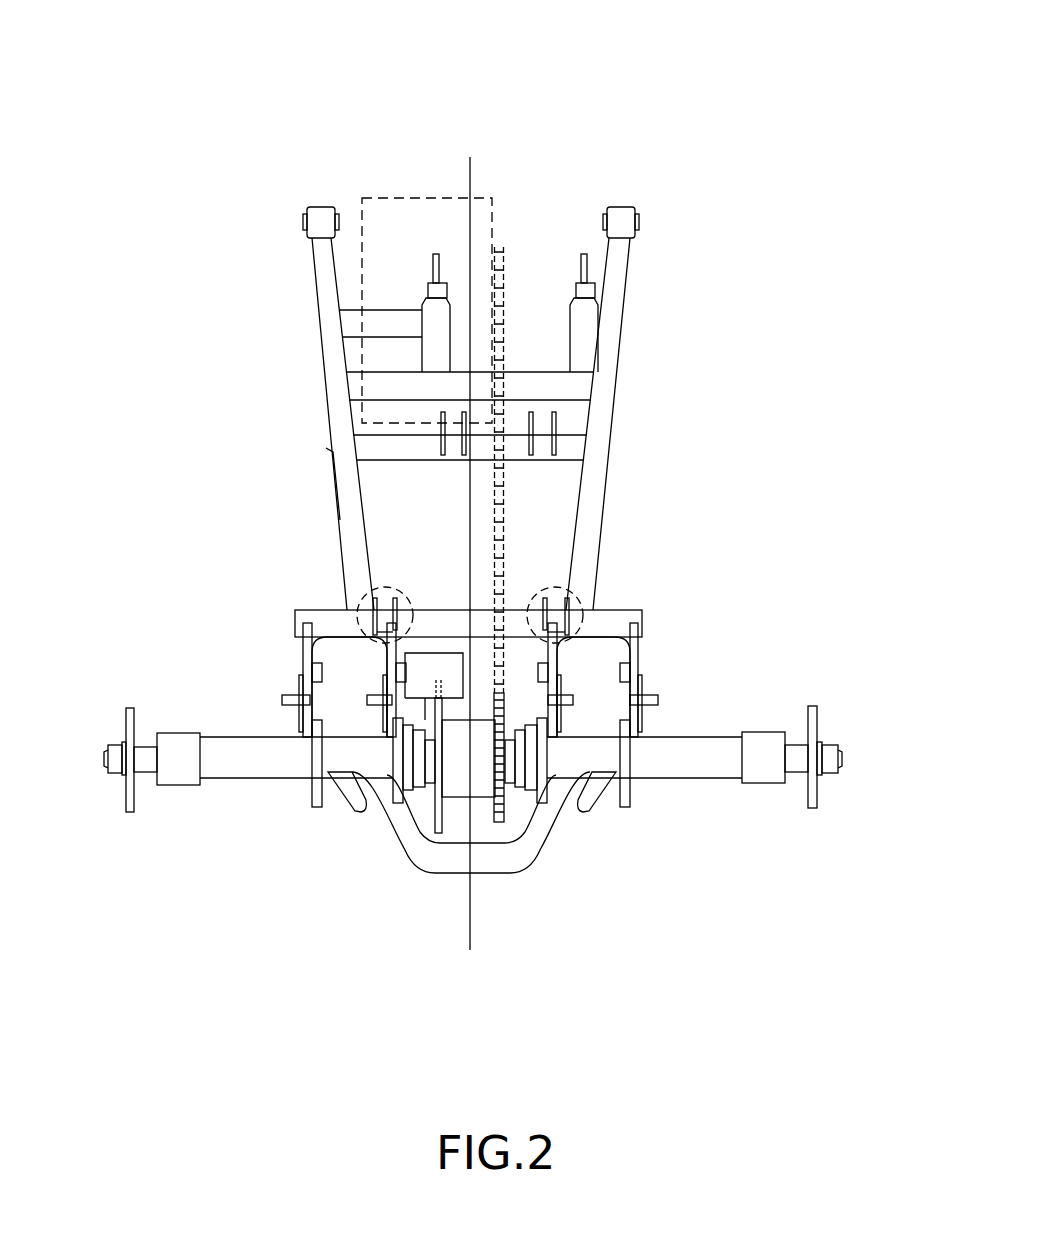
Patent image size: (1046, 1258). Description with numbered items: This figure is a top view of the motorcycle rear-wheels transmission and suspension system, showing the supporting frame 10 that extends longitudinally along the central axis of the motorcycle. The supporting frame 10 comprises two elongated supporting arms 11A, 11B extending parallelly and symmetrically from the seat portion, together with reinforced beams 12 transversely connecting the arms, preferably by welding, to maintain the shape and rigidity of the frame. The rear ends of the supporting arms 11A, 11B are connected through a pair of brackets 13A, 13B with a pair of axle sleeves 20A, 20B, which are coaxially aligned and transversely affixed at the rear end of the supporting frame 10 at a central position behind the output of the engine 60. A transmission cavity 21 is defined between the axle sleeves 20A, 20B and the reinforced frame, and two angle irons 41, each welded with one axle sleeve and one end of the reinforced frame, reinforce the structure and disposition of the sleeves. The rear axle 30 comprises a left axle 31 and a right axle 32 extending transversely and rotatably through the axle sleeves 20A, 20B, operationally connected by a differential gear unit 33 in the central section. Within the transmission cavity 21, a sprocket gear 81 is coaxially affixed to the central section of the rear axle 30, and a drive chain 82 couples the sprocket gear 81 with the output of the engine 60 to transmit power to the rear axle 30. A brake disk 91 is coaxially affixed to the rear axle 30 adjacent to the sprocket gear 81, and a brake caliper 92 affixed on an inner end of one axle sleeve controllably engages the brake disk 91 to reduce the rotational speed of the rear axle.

The supporting frame 10 is at (388, 170).
The engine 60 is at (442, 223).
The supporting arm 11A is at (327, 322).
The supporting arm 11B is at (614, 329).
The reinforced beam 12 is at (565, 387).
The drive chain 82 is at (506, 553).
The sprocket gear 81 is at (520, 817).
The brake caliper 92 is at (433, 663).
The bracket 13A is at (270, 705).
The bracket 13B is at (635, 665).
The axle sleeve 20A is at (252, 762).
The axle sleeve 20B is at (688, 765).
The differential gear unit 33 is at (483, 826).
The brake disk 91 is at (425, 832).
The transmission cavity 21 is at (593, 783).
The angle iron 41 is at (352, 802).
The left axle 31 is at (145, 755).
The right axle 32 is at (800, 762).
The rear axle 30 is at (150, 808).